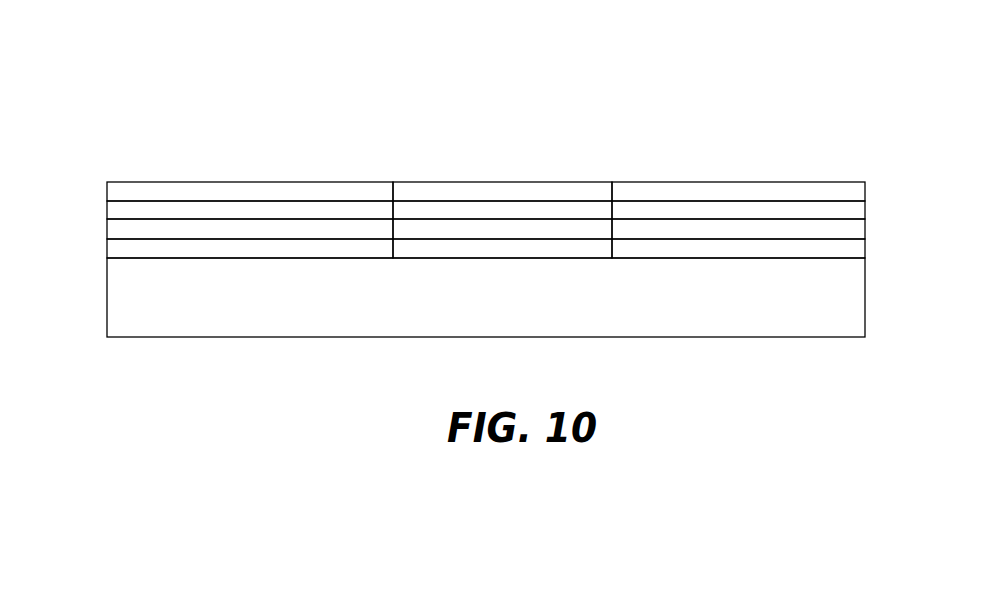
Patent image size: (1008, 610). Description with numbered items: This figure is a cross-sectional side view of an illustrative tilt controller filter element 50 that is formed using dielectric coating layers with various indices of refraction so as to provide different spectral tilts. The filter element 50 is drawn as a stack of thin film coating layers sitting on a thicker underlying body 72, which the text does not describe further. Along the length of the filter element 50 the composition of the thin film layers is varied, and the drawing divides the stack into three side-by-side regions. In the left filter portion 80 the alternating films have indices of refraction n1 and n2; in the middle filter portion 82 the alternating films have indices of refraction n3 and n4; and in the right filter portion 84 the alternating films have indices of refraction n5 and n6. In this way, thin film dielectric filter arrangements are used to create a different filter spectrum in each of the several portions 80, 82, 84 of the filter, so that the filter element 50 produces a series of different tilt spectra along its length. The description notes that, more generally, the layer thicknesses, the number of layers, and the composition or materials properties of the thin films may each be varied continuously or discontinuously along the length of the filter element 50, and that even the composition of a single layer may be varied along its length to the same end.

The filter element 50 is at (619, 78).
The substrate 72 is at (750, 329).
The filter portion 80 is at (243, 139).
The filter portion 82 is at (493, 141).
The filter portion 84 is at (764, 140).
The index of refraction n1 is at (117, 190).
The index of refraction n2 is at (117, 210).
The index of refraction n3 is at (427, 187).
The index of refraction n4 is at (470, 207).
The index of refraction n5 is at (858, 190).
The index of refraction n6 is at (858, 212).